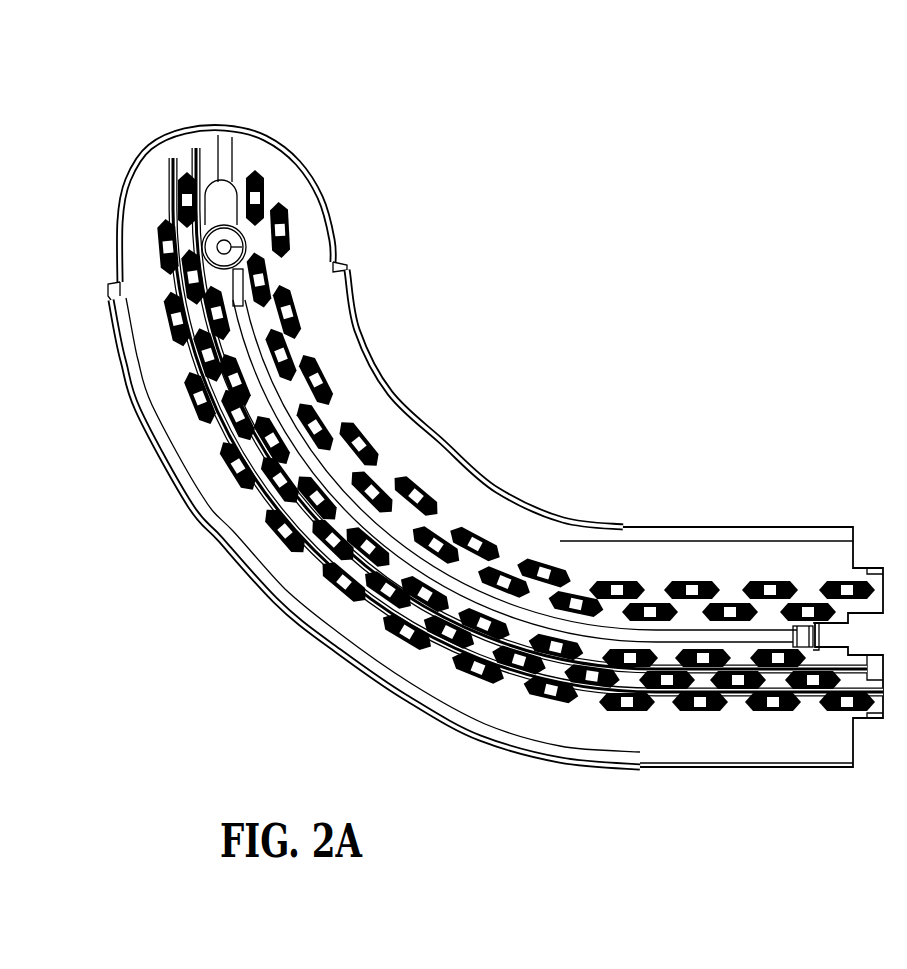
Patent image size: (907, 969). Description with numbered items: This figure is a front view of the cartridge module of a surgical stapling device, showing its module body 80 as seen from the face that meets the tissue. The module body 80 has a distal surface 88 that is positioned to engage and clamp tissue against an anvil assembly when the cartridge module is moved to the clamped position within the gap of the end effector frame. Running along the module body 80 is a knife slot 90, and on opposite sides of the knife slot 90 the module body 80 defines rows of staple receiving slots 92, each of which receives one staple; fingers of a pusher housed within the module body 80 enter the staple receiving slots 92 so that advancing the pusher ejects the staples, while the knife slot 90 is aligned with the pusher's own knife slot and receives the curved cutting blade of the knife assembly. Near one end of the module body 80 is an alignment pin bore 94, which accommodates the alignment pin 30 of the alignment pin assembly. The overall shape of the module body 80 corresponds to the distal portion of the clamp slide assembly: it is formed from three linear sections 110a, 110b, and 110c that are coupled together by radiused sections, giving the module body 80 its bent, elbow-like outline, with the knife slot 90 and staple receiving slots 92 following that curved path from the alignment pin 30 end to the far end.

The alignment pin 30 is at (222, 238).
The module body 80 is at (477, 401).
The distal surface 88 is at (636, 562).
The knife slot 90 is at (330, 473).
The staple receiving slots 92 is at (335, 576).
The alignment pin bore 94 is at (233, 183).
The linear section 110a is at (303, 264).
The linear section 110b is at (433, 481).
The linear section 110c is at (738, 552).